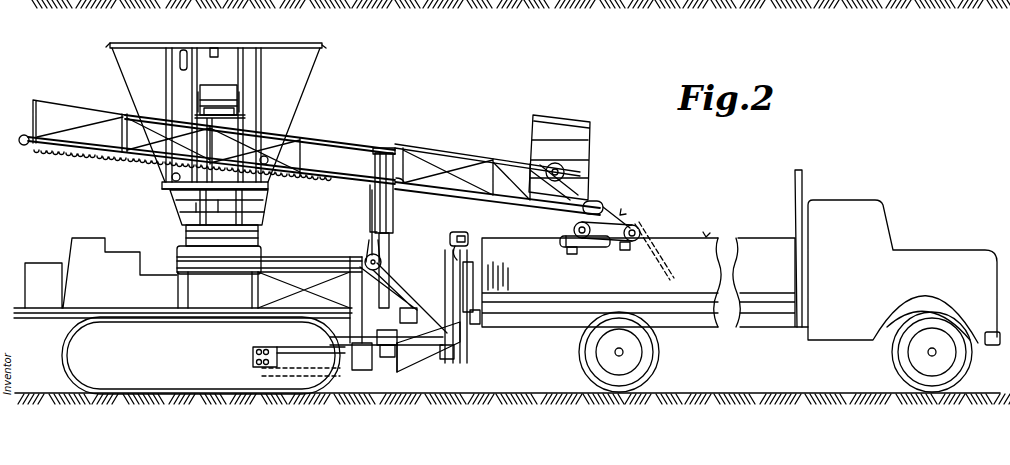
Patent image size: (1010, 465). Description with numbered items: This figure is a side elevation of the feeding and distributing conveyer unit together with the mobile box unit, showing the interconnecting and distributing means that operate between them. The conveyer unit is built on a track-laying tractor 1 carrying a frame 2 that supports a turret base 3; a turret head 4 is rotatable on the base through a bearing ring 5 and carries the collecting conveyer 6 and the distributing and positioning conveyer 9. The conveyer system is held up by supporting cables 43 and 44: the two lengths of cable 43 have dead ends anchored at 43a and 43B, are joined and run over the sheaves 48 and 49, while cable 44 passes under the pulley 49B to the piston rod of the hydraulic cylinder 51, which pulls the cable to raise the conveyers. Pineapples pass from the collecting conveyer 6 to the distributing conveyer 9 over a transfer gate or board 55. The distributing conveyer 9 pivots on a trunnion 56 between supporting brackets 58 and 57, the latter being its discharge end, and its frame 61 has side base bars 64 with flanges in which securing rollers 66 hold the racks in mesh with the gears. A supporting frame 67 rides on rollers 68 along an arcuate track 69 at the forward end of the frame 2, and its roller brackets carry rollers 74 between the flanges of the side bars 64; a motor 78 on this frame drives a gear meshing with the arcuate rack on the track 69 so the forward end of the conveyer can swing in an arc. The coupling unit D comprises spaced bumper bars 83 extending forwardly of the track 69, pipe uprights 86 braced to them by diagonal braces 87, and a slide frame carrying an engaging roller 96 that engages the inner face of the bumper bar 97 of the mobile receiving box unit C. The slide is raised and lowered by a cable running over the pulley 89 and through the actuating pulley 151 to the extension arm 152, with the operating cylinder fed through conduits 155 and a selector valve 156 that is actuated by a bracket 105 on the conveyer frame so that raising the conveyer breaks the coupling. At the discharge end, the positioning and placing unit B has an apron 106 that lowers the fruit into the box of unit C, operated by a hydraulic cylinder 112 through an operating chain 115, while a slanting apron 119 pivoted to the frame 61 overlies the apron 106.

The tractor 1 is at (83, 244).
The frame 2 is at (295, 264).
The turret base 3 is at (244, 244).
The turret head 4 is at (170, 192).
The bearing ring 5 is at (188, 236).
The collecting conveyer 6 is at (200, 102).
The distributing and positioning conveyer 9 is at (372, 145).
The supporting cable 43 is at (305, 80).
The cable anchorage 43a is at (326, 46).
The cable anchorage 43B is at (108, 47).
The supporting cable 44 is at (118, 65).
The sheave 48 is at (184, 62).
The sheave 49 is at (256, 204).
The pulley 49B is at (198, 210).
The hydraulic cylinder 51 is at (190, 199).
The transfer gate or board 55 is at (210, 90).
The trunnion 56 is at (266, 188).
The discharge end 57 is at (590, 198).
The supporting bracket 58 is at (172, 176).
The frame 61 is at (470, 148).
The side base bars 64 is at (432, 192).
The securing rollers 66 is at (268, 154).
The supporting frame 67 is at (372, 204).
The rollers 68 is at (377, 336).
The arcuate track 69 is at (388, 358).
The rollers 74 is at (405, 192).
The motor 78 is at (416, 308).
The bumper bars 83 is at (433, 348).
The pipe uprights 86 is at (474, 361).
The diagonal braces 87 is at (672, 320).
The pulley 89 is at (470, 238).
The engaging roller 96 is at (480, 318).
The bumper bar 97 is at (474, 348).
The bracket 105 is at (372, 220).
The apron 106 is at (652, 254).
The hydraulic cylinder 112 is at (574, 250).
The operating chain 115 is at (578, 228).
The slanting apron 119 is at (634, 224).
The actuating pulley 151 is at (468, 247).
The extension arm 152 is at (464, 236).
The conduits 155 is at (438, 282).
The selector valve 156 is at (370, 255).
The positioning and placing unit B is at (620, 215).
The mobile receiving box unit C is at (706, 237).
The coupling unit D is at (413, 370).